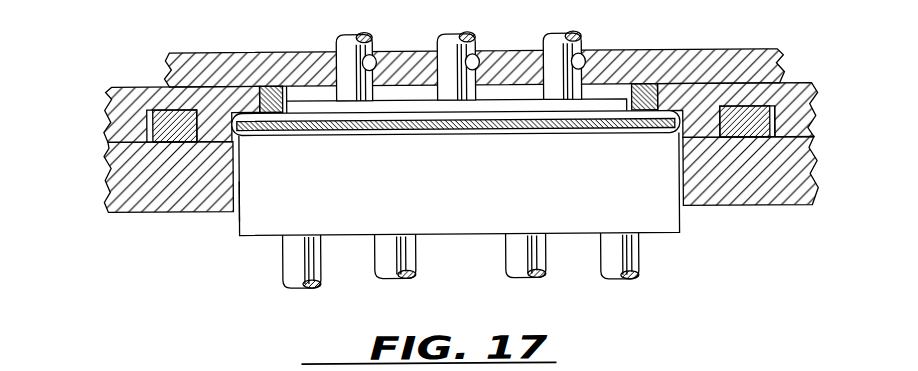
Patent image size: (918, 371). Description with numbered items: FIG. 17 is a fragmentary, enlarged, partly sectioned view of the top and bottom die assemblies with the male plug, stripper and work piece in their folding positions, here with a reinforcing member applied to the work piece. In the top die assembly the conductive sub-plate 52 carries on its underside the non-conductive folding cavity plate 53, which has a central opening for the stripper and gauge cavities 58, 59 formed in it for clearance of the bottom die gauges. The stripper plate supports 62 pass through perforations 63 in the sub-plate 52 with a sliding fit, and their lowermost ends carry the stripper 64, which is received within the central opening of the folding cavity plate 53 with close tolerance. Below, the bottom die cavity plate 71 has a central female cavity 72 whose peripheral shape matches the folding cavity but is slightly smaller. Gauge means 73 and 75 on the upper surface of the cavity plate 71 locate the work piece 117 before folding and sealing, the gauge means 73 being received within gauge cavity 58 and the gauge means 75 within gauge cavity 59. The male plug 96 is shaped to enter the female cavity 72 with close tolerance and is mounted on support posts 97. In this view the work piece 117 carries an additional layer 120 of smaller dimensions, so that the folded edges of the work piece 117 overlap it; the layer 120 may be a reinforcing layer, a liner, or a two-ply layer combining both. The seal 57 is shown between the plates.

The sub-plate 52 is at (238, 70).
The folding cavity plate 53 is at (800, 102).
The seal 57 is at (272, 85).
The gauge cavity 58 is at (147, 120).
The gauge cavity 59 is at (780, 128).
The supports 62 is at (374, 38).
The perforations 63 is at (373, 58).
The stripper 64 is at (525, 108).
The bottom die cavity plate 71 is at (165, 203).
The female cavity 72 is at (249, 211).
The gauge means 73 is at (160, 106).
The gauge means 75 is at (743, 125).
The male plug 96 is at (454, 183).
The support posts 97 is at (283, 290).
The work piece 117 is at (650, 127).
The additional layer 120 is at (632, 85).